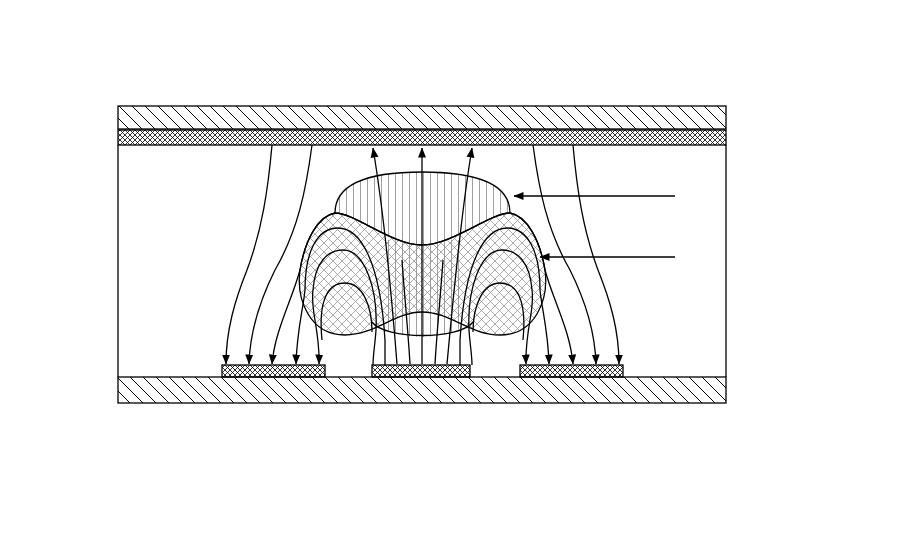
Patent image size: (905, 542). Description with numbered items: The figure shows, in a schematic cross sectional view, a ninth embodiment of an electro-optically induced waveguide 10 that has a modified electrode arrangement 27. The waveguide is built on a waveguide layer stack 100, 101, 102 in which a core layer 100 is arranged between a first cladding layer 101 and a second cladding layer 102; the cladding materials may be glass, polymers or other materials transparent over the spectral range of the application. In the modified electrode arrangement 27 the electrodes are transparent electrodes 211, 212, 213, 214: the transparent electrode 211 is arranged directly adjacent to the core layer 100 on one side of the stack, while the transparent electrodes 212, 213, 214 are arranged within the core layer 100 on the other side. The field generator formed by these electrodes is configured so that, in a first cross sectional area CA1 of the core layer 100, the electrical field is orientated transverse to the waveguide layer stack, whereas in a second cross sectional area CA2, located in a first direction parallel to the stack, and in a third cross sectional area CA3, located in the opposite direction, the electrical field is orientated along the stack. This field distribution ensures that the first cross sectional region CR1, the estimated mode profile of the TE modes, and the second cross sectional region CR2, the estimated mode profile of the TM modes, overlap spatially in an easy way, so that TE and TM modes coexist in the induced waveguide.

The optical device 10 is at (95, 90).
The electrode arrangement 27 is at (104, 252).
The core layer 100 is at (727, 262).
The first cladding layer 101 is at (726, 118).
The second cladding layer 102 is at (726, 390).
The transparent electrode 211 is at (726, 140).
The transparent electrode 212 is at (274, 379).
The transparent electrode 213 is at (423, 379).
The transparent electrode 214 is at (570, 379).
The first cross sectional area CA1 is at (420, 90).
The second cross sectional area CA2 is at (545, 98).
The third cross sectional area CA3 is at (291, 100).
The first cross sectional region CR1 is at (335, 213).
The second cross sectional region CR2 is at (440, 172).